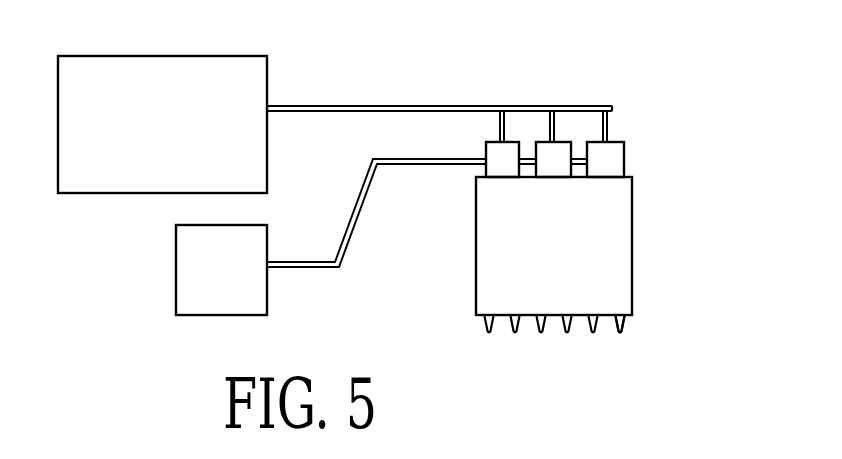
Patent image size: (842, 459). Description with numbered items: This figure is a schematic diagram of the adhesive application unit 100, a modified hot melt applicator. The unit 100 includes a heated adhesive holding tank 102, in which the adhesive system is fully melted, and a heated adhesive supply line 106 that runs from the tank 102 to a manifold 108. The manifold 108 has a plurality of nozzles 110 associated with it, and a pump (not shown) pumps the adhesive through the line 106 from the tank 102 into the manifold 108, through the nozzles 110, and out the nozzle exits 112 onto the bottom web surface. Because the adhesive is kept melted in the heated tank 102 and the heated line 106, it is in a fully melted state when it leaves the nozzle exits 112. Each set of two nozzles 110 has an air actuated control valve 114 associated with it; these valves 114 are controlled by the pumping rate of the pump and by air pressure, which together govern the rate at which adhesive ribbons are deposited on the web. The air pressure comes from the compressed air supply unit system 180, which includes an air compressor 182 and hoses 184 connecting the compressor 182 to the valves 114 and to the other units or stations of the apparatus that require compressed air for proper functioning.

The adhesive application unit 100 is at (519, 78).
The heated adhesive holding tank 102 is at (187, 128).
The heated adhesive supply line 106 is at (336, 106).
The manifold 108 is at (600, 245).
The nozzles 110 is at (628, 325).
The nozzle exits 112 is at (489, 334).
The air actuated control valve 114 is at (500, 162).
The compressed air supply unit system 180 is at (165, 331).
The air compressor 182 is at (240, 281).
The hoses 184 is at (362, 203).